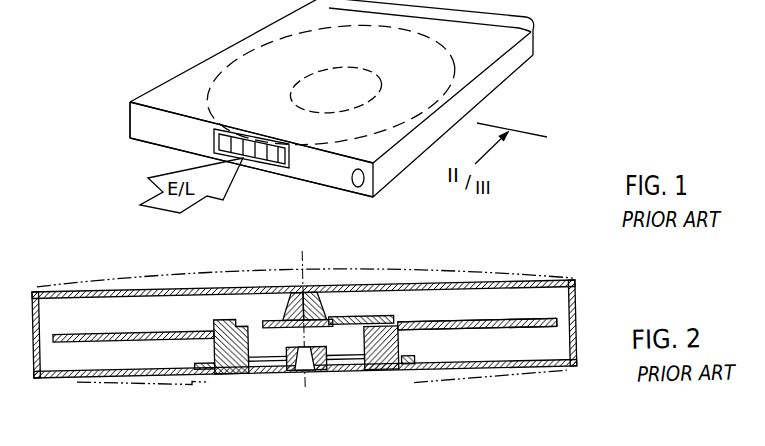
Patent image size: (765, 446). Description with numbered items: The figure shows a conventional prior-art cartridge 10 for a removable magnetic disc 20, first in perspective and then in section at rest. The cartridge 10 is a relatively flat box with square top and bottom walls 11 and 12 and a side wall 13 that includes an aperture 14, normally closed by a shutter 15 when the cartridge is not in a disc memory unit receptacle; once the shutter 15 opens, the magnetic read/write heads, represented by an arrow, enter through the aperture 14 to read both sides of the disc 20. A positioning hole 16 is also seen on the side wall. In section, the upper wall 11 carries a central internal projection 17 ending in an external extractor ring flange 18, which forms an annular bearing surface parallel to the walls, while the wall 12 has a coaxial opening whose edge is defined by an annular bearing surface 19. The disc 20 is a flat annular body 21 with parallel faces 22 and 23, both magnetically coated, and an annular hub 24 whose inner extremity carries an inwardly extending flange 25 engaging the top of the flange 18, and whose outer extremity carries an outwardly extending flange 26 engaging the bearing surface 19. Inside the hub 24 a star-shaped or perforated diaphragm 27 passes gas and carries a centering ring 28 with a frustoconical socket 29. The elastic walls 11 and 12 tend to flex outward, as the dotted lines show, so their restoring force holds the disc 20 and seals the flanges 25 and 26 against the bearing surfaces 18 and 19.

In FIG. 1, the cartridge 10 is at (160, 72).
In FIG. 2, the cartridge 10 is at (73, 389).
In FIG. 1, the top wall 11 is at (203, 75).
In FIG. 2, the top wall 11 is at (153, 302).
In FIG. 1, the bottom wall 12 is at (153, 145).
In FIG. 2, the bottom wall 12 is at (93, 355).
In FIG. 1, the side wall 13 is at (140, 121).
In FIG. 2, the side wall 13 is at (40, 322).
In FIG. 1, the aperture 14 is at (280, 170).
In FIG. 1, the shutter 15 is at (256, 165).
In FIG. 1, the positioning hole 16 is at (352, 174).
In FIG. 2, the internal projection 17 is at (287, 316).
In FIG. 2, the extractor ring flange 18 is at (250, 337).
In FIG. 2, the annular bearing surface 19 is at (202, 364).
In FIG. 1, the magnetic disc 20 is at (331, 85).
In FIG. 2, the magnetic disc 20 is at (400, 329).
In FIG. 2, the flat annular body 21 is at (558, 334).
In FIG. 2, the face 22 is at (527, 331).
In FIG. 2, the face 23 is at (527, 343).
In FIG. 2, the annular hub 24 is at (400, 354).
In FIG. 2, the inwardly extending flange 25 is at (333, 329).
In FIG. 2, the outwardly extending flange 26 is at (403, 378).
In FIG. 2, the diaphragm 27 is at (326, 350).
In FIG. 2, the centering ring 28 is at (332, 372).
In FIG. 2, the frustoconical socket 29 is at (302, 383).